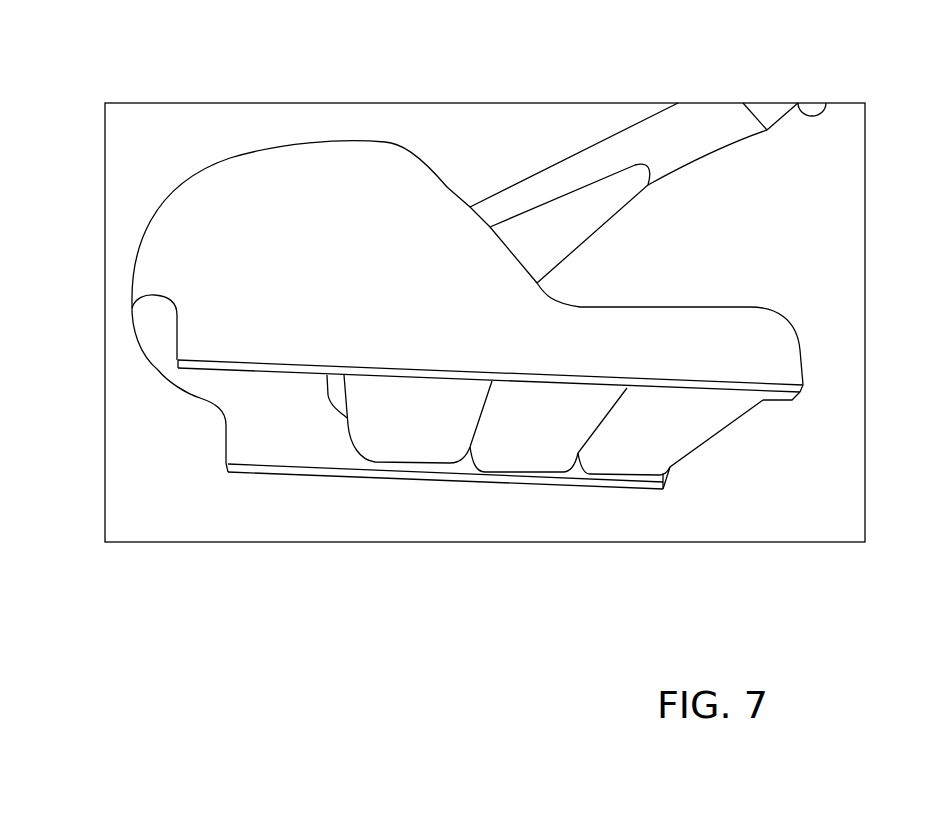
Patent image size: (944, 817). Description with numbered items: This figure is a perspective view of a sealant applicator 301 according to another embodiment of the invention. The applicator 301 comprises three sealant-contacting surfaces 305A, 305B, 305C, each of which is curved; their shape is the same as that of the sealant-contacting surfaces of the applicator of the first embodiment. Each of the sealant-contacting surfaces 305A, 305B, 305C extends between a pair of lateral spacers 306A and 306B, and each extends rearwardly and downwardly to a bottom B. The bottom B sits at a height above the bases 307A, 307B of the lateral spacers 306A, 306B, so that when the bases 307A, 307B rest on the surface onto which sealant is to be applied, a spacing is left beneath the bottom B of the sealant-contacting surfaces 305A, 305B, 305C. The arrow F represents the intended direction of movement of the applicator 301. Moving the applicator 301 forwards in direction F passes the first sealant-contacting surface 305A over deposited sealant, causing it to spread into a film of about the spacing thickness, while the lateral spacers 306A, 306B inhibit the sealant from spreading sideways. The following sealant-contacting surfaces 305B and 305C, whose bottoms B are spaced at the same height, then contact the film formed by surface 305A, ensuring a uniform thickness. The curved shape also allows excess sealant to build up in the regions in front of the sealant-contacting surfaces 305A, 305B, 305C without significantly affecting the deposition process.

The applicator 301 is at (239, 183).
The sealant-contacting surface 305A is at (388, 441).
The sealant-contacting surface 305B is at (527, 440).
The sealant-contacting surface 305C is at (615, 445).
The bottom B is at (450, 440).
The lateral spacer 306A is at (263, 457).
The lateral spacer 306B is at (745, 387).
The base 307A is at (708, 387).
The base 307B is at (312, 472).
The direction of movement F is at (265, 283).